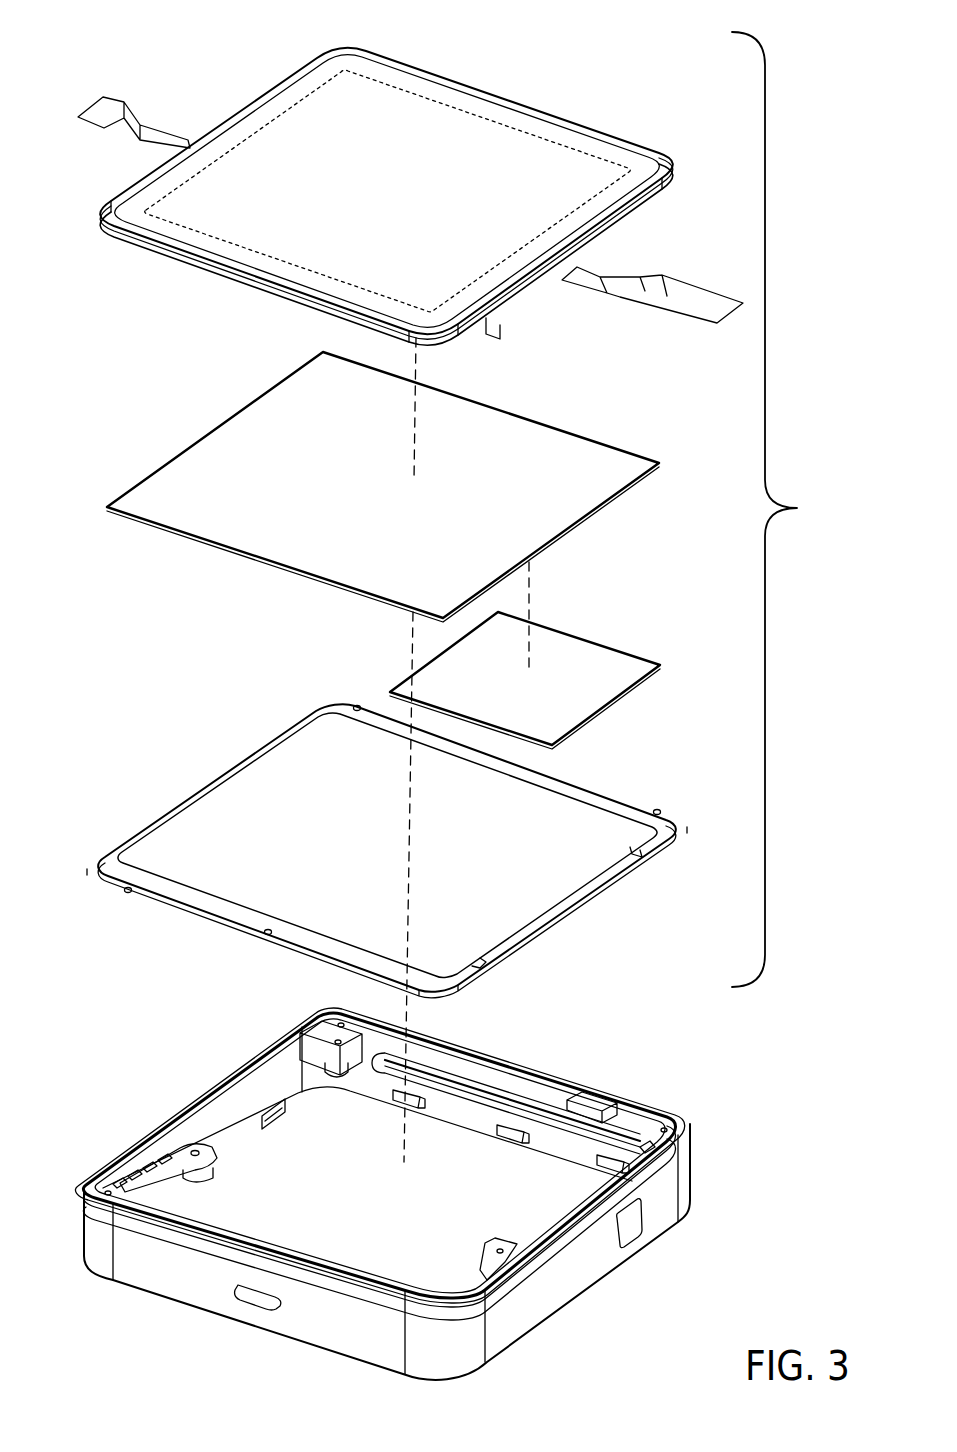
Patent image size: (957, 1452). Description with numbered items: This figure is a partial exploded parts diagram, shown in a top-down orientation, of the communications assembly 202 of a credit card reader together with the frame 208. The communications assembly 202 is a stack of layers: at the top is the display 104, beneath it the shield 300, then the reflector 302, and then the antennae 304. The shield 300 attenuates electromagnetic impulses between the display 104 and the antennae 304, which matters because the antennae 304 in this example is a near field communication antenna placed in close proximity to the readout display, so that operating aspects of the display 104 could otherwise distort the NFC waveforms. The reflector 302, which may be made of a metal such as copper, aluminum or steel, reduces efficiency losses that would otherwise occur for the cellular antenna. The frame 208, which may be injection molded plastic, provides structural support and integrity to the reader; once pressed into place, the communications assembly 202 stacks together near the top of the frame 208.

The display 104 is at (266, 113).
The shield 300 is at (215, 457).
The reflector 302 is at (571, 661).
The antennae 304 is at (211, 786).
The frame 208 is at (233, 1118).
The communications assembly 202 is at (791, 509).